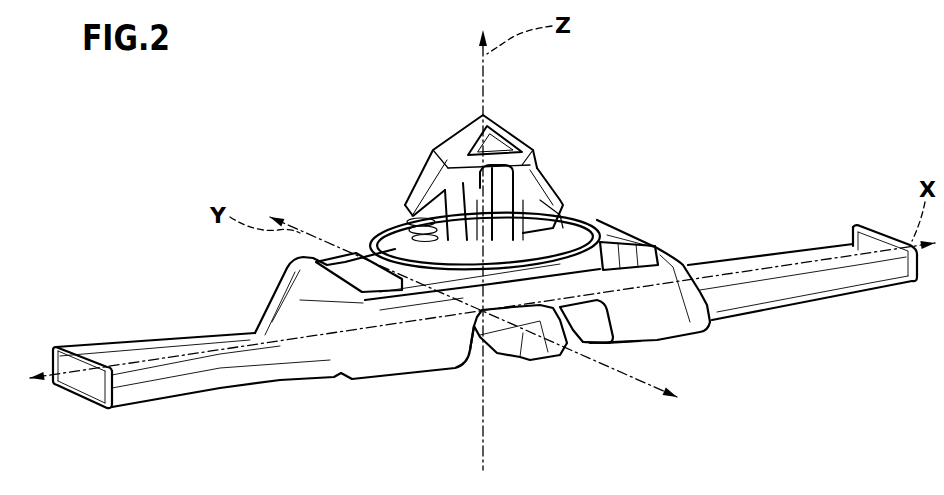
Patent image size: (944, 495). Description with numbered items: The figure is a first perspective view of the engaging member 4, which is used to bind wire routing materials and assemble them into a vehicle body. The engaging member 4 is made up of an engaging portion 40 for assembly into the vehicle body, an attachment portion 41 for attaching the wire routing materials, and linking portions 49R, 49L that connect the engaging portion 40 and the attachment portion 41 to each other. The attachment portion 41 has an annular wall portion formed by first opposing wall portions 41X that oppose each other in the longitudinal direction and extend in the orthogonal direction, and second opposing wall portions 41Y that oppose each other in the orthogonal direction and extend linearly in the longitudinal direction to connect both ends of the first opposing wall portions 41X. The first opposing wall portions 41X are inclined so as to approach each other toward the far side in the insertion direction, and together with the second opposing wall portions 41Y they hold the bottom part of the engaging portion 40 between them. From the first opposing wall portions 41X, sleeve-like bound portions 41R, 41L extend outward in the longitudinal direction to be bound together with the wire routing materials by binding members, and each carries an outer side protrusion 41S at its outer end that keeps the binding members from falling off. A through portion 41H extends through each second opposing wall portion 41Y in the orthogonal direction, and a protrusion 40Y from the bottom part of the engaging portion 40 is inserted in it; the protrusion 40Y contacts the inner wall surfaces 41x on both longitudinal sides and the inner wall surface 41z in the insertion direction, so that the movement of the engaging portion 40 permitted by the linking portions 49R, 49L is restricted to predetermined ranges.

The engaging member 4 is at (340, 140).
The engaging portion 40 is at (520, 130).
The protrusion 40Y is at (532, 355).
The attachment portion 41 is at (672, 340).
The bound portion 41L is at (173, 353).
The bound portion 41R is at (807, 257).
The outer side protrusion 41S is at (73, 353).
The first opposing wall portion 41X is at (297, 299).
The second opposing wall portion 41Y is at (300, 262).
The through portion 41H is at (495, 358).
The inner wall surface 41x is at (470, 352).
The inner wall surface 41z is at (602, 350).
The linking portion 49L is at (365, 271).
The linking portion 49R is at (657, 254).